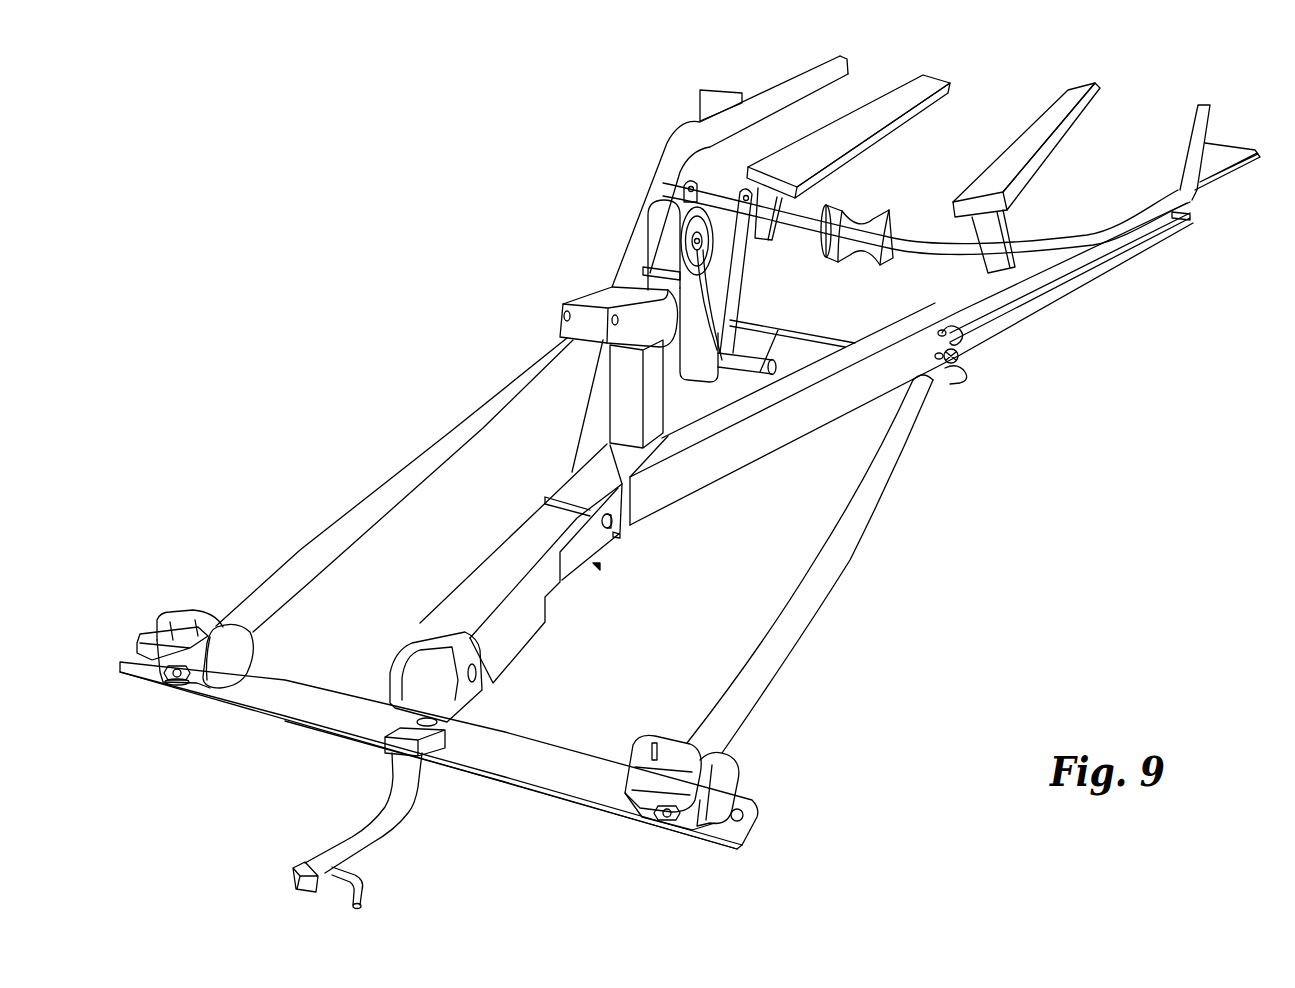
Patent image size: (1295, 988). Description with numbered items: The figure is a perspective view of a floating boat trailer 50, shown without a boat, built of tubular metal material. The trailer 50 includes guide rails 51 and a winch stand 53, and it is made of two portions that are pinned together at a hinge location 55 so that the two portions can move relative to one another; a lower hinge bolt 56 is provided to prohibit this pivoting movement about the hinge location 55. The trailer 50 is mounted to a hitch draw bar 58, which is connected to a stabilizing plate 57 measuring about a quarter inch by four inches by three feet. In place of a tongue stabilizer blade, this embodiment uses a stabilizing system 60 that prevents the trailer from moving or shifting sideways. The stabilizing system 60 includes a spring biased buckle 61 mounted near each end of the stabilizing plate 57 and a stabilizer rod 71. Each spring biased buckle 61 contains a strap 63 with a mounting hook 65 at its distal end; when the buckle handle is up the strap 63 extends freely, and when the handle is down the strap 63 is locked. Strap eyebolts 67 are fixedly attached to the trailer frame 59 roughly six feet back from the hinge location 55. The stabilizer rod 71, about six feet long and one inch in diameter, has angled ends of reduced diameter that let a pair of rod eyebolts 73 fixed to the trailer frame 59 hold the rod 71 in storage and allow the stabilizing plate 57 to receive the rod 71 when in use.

The floating boat trailer 50 is at (662, 89).
The guide rails 51 is at (887, 110).
The winch stand 53 is at (633, 283).
The hinge location 55 is at (523, 492).
The lower hinge bolt 56 is at (628, 536).
The stabilizing plate 57 is at (523, 748).
The hitch draw bar 58 is at (367, 822).
The trailer frame 59 is at (1198, 117).
The stabilizing system 60 is at (873, 661).
The spring biased buckle 61 is at (728, 771).
The strap 63 is at (847, 550).
The mounting hook 65 is at (957, 380).
The strap eyebolts 67 is at (967, 358).
The stabilizer rod 71 is at (1147, 235).
The rod eyebolts 73 is at (937, 325).